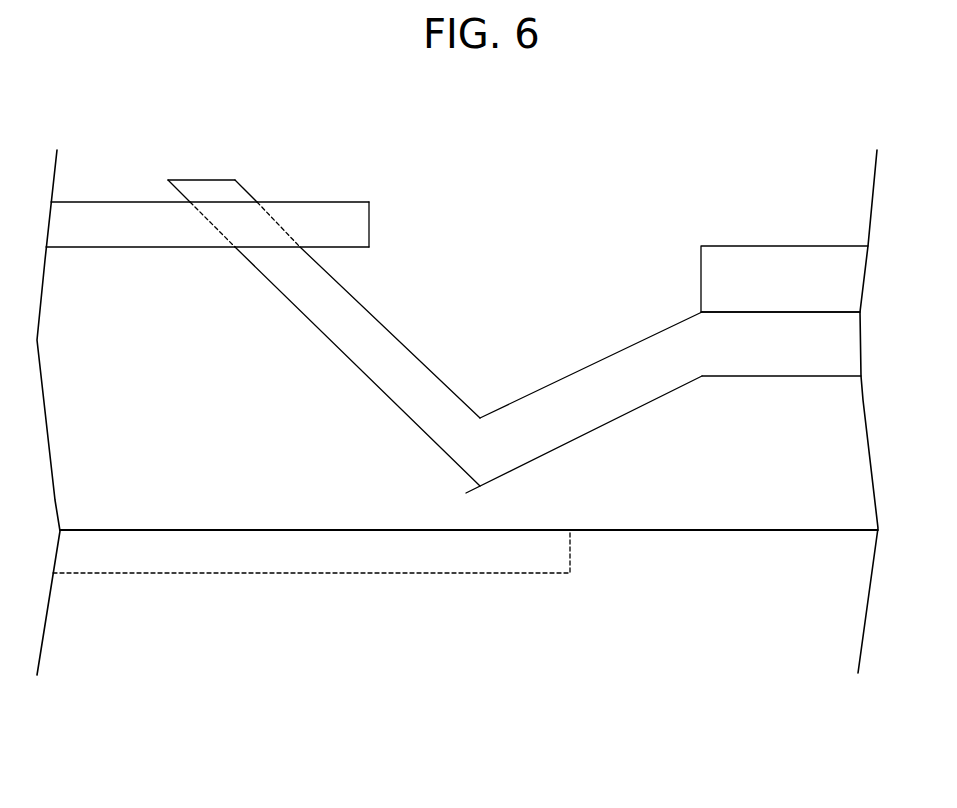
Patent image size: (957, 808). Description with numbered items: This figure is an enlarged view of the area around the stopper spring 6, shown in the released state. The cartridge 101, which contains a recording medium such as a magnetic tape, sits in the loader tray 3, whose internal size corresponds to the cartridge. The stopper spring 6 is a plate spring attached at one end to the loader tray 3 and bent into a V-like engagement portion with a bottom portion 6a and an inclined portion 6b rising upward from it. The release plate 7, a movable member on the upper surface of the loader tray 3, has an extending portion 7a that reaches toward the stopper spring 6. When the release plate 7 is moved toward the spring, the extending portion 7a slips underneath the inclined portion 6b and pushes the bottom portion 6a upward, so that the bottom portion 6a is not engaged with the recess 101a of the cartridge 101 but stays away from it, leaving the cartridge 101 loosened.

The loader tray 3 is at (726, 246).
The stopper spring 6 is at (514, 350).
The bottom portion 6a is at (466, 493).
The inclined portion 6b is at (330, 333).
The release plate 7 is at (80, 202).
The extending portion 7a is at (370, 235).
The cartridge 101 is at (104, 531).
The recess 101a is at (553, 573).